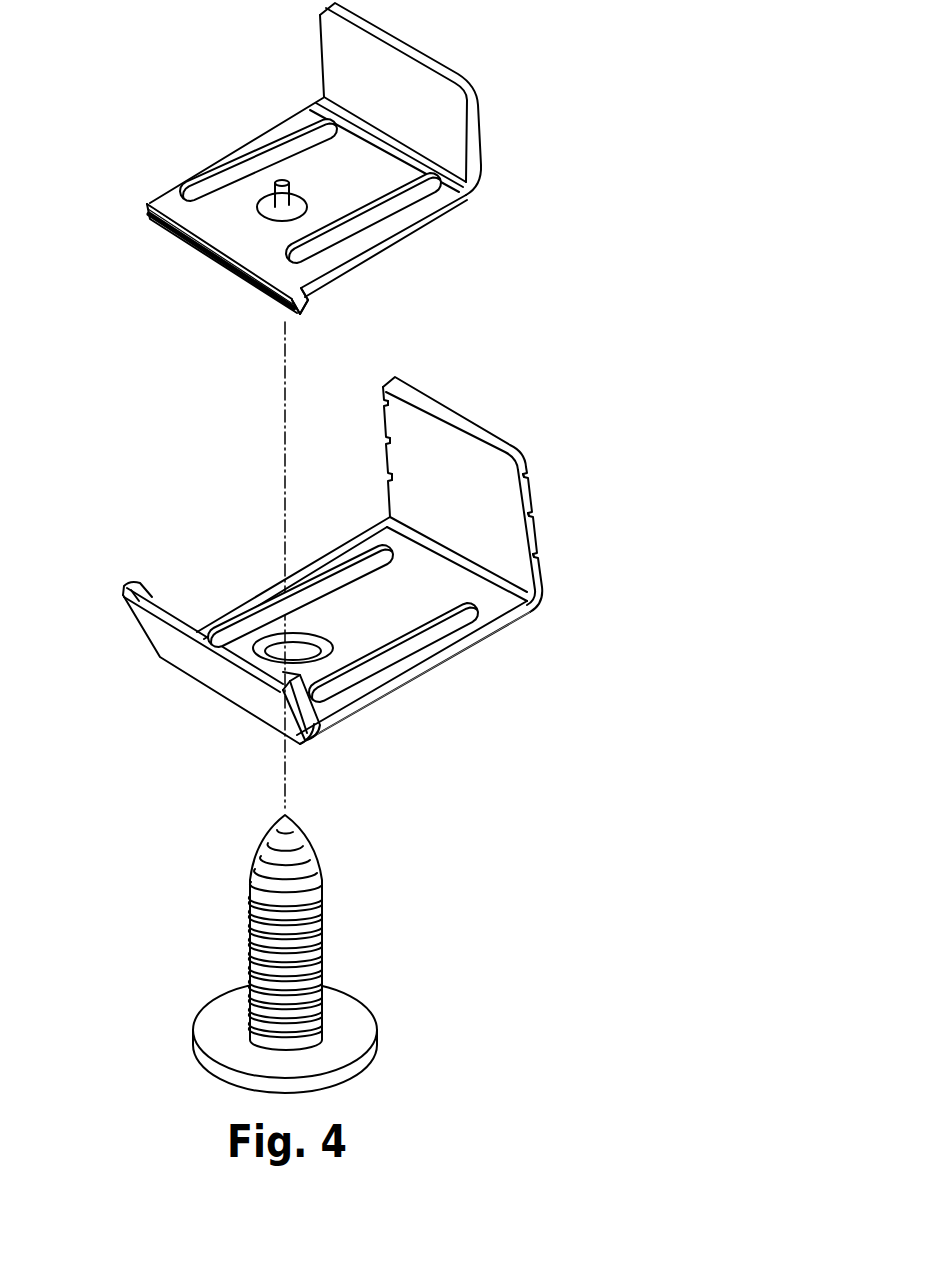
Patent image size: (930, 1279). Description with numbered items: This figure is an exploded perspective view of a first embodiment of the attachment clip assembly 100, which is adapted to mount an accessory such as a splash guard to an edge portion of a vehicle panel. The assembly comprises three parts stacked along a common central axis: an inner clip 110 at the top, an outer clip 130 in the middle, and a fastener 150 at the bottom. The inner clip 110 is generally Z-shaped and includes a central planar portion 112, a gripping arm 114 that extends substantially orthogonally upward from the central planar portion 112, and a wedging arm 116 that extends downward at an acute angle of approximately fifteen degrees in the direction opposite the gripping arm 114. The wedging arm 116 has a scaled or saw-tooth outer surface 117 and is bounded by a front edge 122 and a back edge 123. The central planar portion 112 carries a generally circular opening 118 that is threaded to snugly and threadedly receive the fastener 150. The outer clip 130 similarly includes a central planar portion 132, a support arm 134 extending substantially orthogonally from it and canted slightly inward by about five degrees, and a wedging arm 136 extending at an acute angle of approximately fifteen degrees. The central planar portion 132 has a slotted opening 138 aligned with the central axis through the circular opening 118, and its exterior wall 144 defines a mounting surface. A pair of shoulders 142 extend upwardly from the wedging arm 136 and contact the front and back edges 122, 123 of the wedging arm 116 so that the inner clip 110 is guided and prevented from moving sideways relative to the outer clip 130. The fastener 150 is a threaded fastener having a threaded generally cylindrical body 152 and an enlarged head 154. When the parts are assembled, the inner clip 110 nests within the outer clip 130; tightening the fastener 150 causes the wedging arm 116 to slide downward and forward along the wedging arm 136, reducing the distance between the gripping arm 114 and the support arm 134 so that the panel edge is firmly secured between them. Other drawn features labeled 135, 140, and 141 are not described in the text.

The attachment clip assembly 100 is at (327, 197).
The inner clip 110 is at (327, 197).
The central planar portion 112 is at (340, 192).
The gripping arm 114 is at (395, 80).
The wedging arm 116 is at (307, 305).
The saw-tooth outer surface 117 is at (248, 287).
The circular opening 118 is at (262, 192).
The front edge 122 is at (293, 313).
The back edge 123 is at (148, 222).
The outer clip 130 is at (397, 569).
The central planar portion 132 is at (333, 657).
The support arm 134 is at (458, 460).
The notches 135 is at (382, 455).
The wedging arm 136 is at (217, 672).
The slotted opening 138 is at (297, 642).
The base plate of lower bracket 140 is at (503, 625).
The slot 141 is at (308, 556).
The shoulders 142 is at (153, 600).
The exterior wall 144 is at (477, 650).
The fastener 150 is at (279, 954).
The threaded cylindrical body 152 is at (297, 920).
The enlarged head 154 is at (340, 1040).